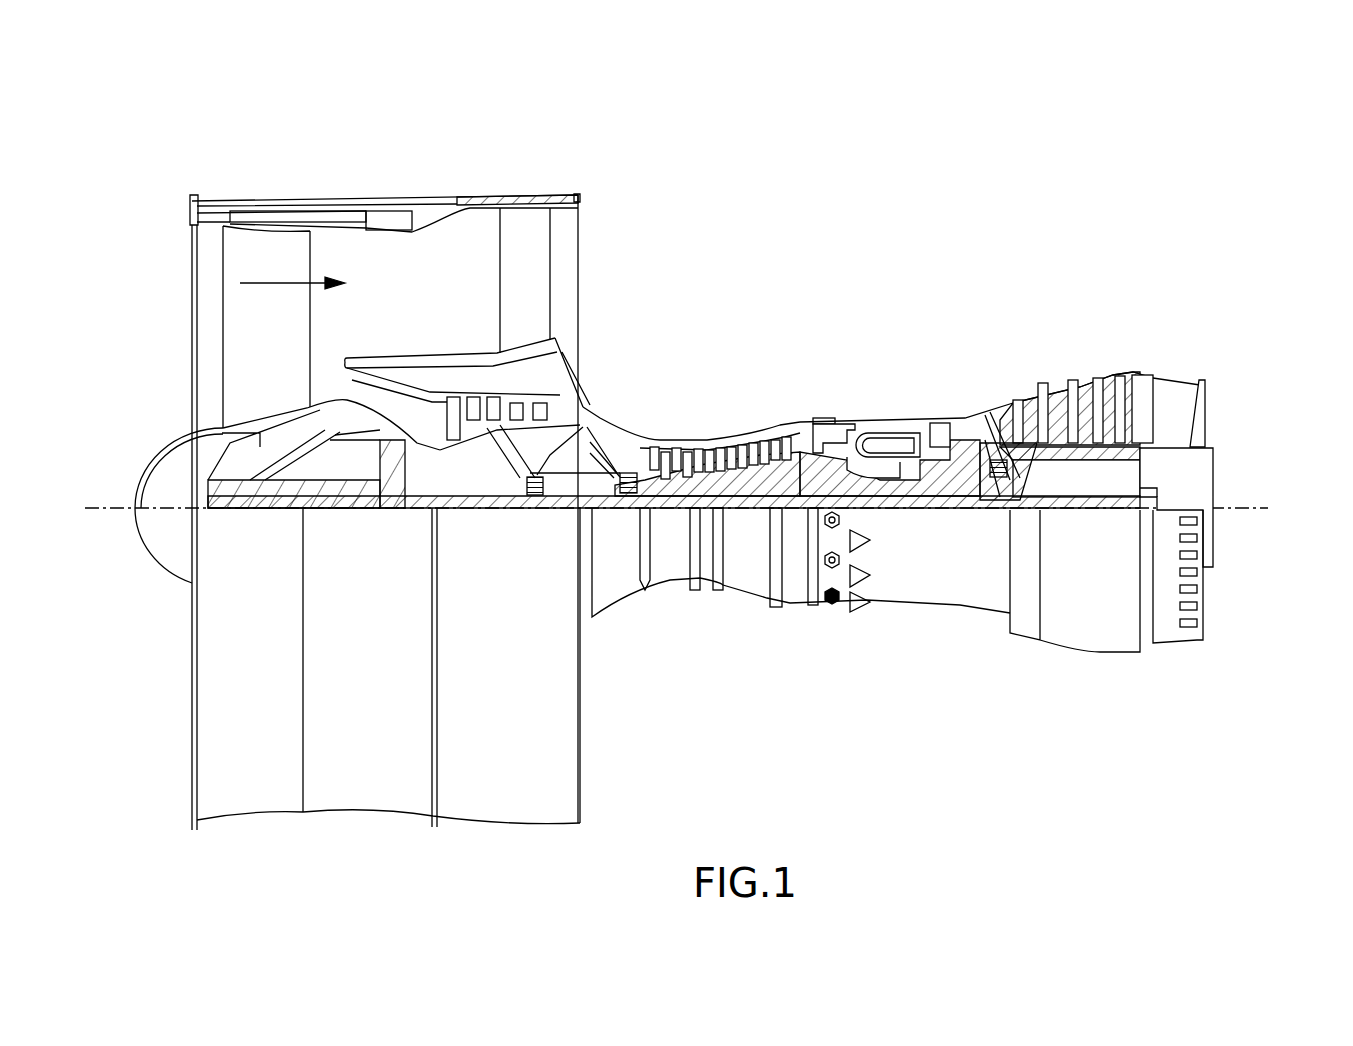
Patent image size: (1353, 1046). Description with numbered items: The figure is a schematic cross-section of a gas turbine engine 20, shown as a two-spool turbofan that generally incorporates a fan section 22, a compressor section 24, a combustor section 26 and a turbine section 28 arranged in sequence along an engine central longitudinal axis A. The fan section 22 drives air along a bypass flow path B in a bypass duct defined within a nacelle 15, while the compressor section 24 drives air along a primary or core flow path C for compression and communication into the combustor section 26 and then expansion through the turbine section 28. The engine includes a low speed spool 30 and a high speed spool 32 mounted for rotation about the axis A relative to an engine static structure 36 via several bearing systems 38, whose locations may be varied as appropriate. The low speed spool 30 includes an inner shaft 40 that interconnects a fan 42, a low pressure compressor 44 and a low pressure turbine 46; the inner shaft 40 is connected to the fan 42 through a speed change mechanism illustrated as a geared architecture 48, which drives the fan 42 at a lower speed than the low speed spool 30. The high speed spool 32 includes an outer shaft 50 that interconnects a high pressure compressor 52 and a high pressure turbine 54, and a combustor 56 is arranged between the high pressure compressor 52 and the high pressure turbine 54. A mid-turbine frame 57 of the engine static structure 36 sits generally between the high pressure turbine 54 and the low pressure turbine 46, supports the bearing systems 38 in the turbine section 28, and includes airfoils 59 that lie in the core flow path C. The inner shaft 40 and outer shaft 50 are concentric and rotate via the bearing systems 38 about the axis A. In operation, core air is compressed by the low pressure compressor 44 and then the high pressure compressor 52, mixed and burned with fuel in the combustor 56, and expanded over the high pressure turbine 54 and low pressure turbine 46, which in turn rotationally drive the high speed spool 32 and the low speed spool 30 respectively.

The gas turbine engine 20 is at (902, 212).
The fan section 22 is at (303, 188).
The nacelle 15 is at (384, 218).
The fan 42 is at (275, 324).
The bypass flow path B is at (274, 282).
The core flow path C is at (350, 385).
The geared architecture 48 is at (393, 493).
The compressor section 24 is at (632, 395).
The low pressure compressor 44 is at (512, 405).
The bearing systems 38 is at (533, 492).
The high pressure compressor 52 is at (748, 438).
The combustor section 26 is at (870, 382).
The high speed spool 32 is at (805, 460).
The combustor 56 is at (882, 440).
The high pressure turbine 54 is at (933, 426).
The turbine section 28 is at (1040, 342).
The low pressure turbine 46 is at (1082, 386).
The mid-turbine frame 57 is at (987, 405).
The airfoils 59 is at (987, 440).
The low speed spool 30 is at (748, 550).
The inner shaft 40 is at (603, 507).
The engine static structure 36 is at (793, 580).
The outer shaft 50 is at (868, 492).
The engine central longitudinal axis A is at (1262, 505).